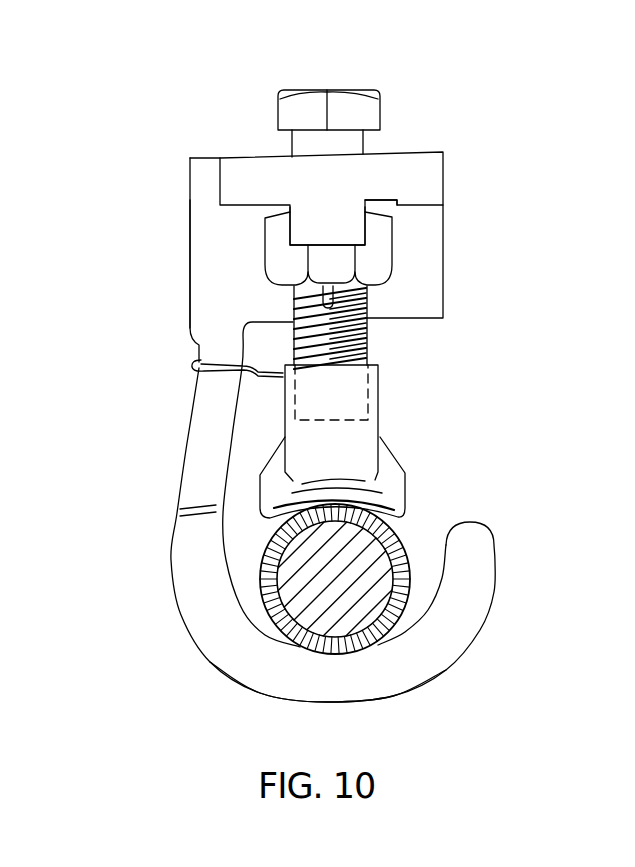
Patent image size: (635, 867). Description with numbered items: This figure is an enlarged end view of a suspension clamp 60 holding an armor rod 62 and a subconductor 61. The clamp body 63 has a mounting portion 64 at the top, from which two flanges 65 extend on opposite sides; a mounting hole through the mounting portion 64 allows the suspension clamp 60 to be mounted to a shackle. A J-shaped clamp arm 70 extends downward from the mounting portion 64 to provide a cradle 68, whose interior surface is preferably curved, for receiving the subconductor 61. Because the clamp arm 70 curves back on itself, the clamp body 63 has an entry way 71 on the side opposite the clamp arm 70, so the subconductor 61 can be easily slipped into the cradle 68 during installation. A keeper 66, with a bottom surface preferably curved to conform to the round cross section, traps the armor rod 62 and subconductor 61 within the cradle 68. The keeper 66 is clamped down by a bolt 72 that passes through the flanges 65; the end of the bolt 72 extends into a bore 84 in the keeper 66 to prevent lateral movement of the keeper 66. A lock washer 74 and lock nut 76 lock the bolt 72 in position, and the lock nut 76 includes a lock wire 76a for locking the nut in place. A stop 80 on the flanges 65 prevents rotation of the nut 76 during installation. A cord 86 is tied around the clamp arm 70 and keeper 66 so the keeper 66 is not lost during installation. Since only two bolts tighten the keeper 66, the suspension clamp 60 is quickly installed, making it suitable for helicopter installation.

The suspension clamp 60 is at (455, 73).
The subconductor 61 is at (283, 583).
The armor rod 62 is at (393, 607).
The clamp body 63 is at (203, 302).
The mounting portion 64 is at (208, 170).
The flanges 65 is at (398, 163).
The keeper 66 is at (378, 390).
The cradle 68 is at (300, 700).
The J-shaped clamp arm 70 is at (188, 433).
The entry way 71 is at (495, 457).
The bolts 72 is at (350, 102).
The lock washer 74 is at (397, 205).
The lock nut 76 is at (387, 255).
The lock wire 76a is at (367, 297).
The stop 80 is at (345, 233).
The bore 84 is at (360, 423).
The cord 86 is at (267, 379).